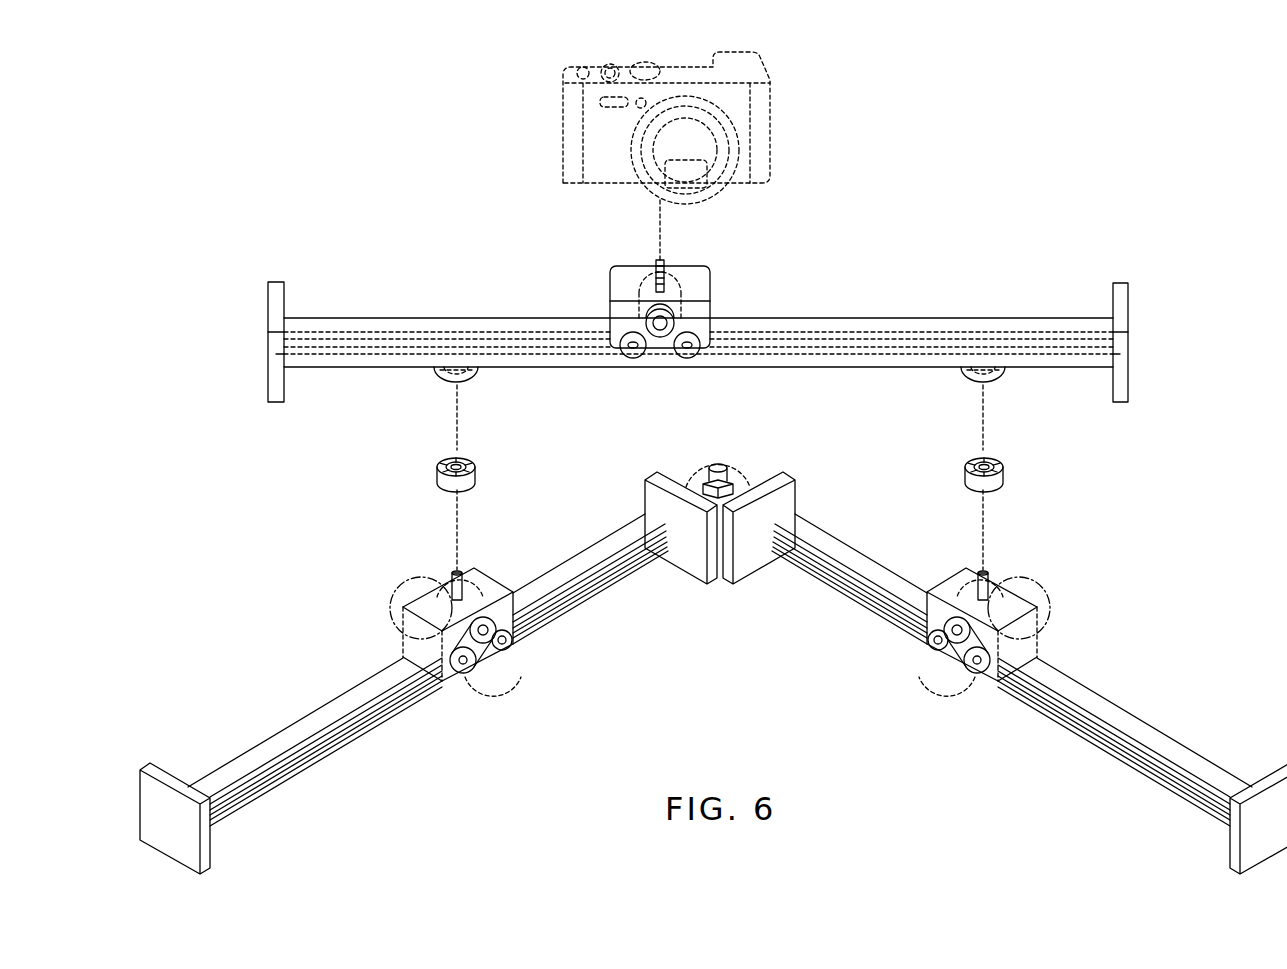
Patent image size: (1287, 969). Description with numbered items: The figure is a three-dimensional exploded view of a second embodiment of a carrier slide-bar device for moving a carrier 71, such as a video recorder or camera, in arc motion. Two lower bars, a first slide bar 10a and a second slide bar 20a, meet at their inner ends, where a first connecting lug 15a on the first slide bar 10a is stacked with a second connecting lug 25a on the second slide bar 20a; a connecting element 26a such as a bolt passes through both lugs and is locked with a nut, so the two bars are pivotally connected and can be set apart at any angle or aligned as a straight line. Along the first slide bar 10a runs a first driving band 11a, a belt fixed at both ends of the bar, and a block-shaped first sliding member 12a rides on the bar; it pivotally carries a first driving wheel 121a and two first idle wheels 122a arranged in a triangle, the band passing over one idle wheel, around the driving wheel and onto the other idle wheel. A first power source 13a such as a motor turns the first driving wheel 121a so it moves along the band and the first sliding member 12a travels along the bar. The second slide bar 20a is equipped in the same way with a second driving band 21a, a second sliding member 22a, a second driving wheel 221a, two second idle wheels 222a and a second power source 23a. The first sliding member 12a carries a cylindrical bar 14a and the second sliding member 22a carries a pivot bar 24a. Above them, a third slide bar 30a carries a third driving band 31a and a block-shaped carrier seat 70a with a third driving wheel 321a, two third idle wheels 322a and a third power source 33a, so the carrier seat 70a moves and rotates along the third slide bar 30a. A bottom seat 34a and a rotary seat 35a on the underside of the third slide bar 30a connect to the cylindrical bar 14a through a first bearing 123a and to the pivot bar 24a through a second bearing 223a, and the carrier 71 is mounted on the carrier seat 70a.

The carrier 71 is at (762, 140).
The third slide bar 30a is at (988, 322).
The third driving band 31a is at (886, 338).
The third power source 33a is at (680, 292).
The bottom seat 34a is at (985, 383).
The rotary seat 35a is at (452, 383).
The carrier seat 70a is at (710, 282).
The third driving wheel 321a is at (640, 302).
The third idle wheels 322a is at (687, 352).
The first connecting lug 15a is at (720, 542).
The second connecting lug 25a is at (706, 478).
The connecting element 26a is at (722, 472).
The second slide bar 20a is at (293, 733).
The second driving band 21a is at (345, 748).
The second sliding member 22a is at (425, 590).
The second power source 23a is at (418, 628).
The pivot bar 24a is at (455, 580).
The second driving wheel 221a is at (490, 600).
The second idle wheels 222a is at (470, 675).
The second bearing 223a is at (446, 484).
The first slide bar 10a is at (1145, 733).
The first driving band 11a is at (1080, 748).
The first sliding member 12a is at (1012, 600).
The first power source 13a is at (1017, 630).
The cylindrical bar 14a is at (985, 580).
The first driving wheel 121a is at (932, 590).
The first idle wheels 122a is at (975, 675).
The first bearing 123a is at (996, 485).